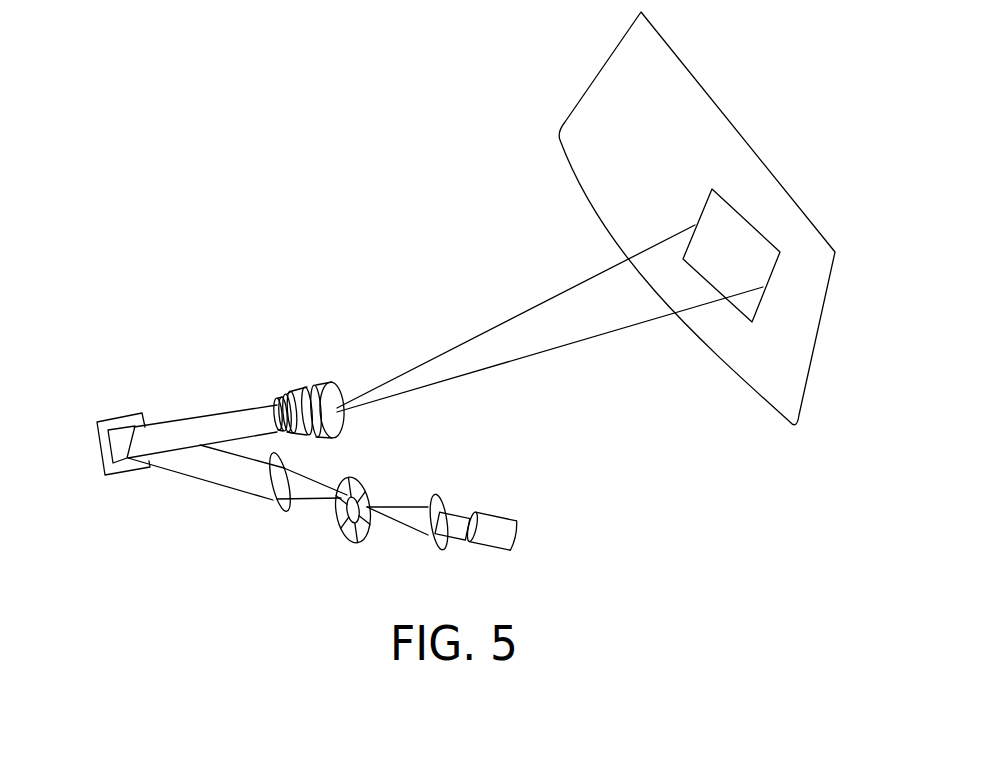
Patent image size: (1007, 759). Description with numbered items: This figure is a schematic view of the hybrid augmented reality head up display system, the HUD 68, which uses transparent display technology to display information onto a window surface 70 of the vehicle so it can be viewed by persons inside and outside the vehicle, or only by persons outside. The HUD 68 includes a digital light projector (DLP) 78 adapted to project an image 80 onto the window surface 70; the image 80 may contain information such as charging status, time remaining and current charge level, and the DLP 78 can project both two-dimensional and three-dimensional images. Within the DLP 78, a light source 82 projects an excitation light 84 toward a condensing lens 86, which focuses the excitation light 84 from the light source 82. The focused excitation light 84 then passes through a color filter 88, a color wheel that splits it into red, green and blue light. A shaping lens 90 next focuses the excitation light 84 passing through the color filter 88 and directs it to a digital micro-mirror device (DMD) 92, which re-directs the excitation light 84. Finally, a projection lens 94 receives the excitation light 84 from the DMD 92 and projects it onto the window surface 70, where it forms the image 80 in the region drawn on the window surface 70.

The internal/external display system 68 is at (170, 546).
The window surface 70 is at (650, 127).
The digital light projector 78 is at (281, 527).
The image 80 is at (747, 218).
The light source 82 is at (508, 534).
The excitation light 84 is at (453, 522).
The condensing lens 86 is at (432, 548).
The color filter 88 is at (367, 481).
The shaping lens 90 is at (273, 506).
The digital micro-mirror device 92 is at (122, 421).
The projection lens 94 is at (307, 395).